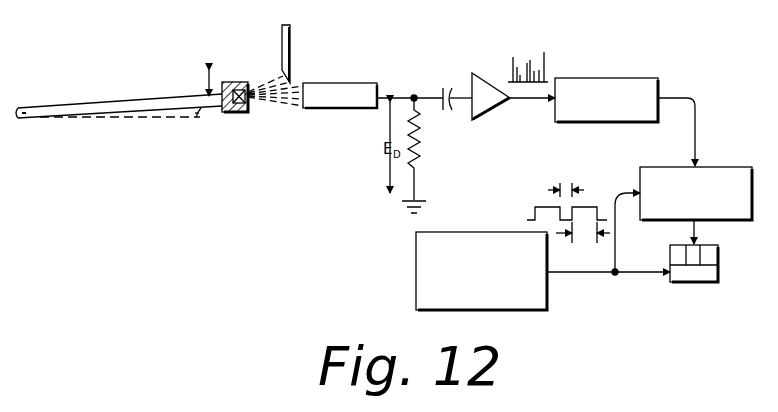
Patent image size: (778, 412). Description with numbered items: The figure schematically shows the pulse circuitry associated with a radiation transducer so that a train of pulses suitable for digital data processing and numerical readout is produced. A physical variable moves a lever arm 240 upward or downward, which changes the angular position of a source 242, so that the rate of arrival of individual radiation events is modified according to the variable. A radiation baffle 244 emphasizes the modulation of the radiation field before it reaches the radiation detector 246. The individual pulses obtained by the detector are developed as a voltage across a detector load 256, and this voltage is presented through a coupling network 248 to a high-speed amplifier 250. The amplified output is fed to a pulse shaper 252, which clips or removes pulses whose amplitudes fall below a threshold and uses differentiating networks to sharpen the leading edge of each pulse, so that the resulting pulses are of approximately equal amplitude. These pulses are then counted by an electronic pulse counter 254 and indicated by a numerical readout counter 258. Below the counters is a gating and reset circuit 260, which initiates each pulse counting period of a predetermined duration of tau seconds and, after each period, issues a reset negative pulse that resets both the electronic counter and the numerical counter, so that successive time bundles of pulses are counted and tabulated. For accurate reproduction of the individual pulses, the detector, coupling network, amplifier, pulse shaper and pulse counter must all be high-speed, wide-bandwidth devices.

The lever arm 240 is at (112, 101).
The source 242 is at (242, 113).
The radiation baffle 244 is at (292, 61).
The radiation detector 246 is at (350, 109).
The coupling network 248 is at (462, 144).
The amplifier 250 is at (488, 111).
The pulse shaper 252 is at (608, 77).
The pulse counter 254 is at (707, 167).
The detector load 256 is at (421, 158).
The numerical readout counter 258 is at (695, 283).
The gating and reset circuit 260 is at (416, 275).